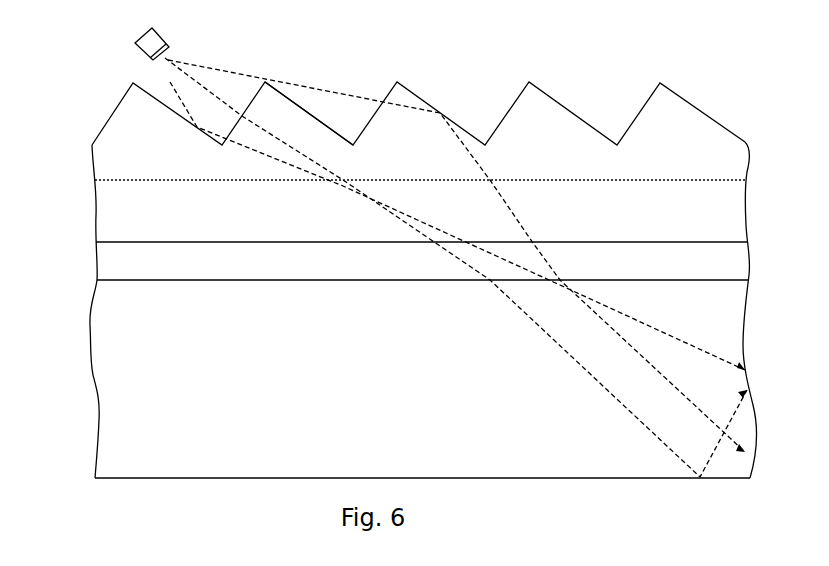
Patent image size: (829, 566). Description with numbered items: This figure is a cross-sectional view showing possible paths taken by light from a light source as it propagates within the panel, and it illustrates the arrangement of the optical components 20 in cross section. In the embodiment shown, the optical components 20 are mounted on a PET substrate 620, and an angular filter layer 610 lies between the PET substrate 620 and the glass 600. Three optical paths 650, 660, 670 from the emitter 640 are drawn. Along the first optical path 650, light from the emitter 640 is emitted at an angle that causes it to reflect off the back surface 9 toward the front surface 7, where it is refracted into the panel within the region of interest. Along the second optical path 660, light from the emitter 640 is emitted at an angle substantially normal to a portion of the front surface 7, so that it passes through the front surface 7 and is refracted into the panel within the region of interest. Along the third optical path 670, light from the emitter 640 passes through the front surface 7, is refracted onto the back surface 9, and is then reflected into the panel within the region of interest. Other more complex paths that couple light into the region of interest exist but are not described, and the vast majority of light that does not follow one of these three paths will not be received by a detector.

The front surface 7 is at (510, 108).
The back surface 9 is at (305, 108).
The optical components 20 is at (122, 140).
The glass 600 is at (120, 410).
The angular filter layer 610 is at (122, 268).
The PET substrate 620 is at (122, 220).
The emitter 640 is at (137, 41).
The optical path 650 is at (170, 82).
The optical path 660 is at (220, 93).
The optical path 670 is at (298, 82).